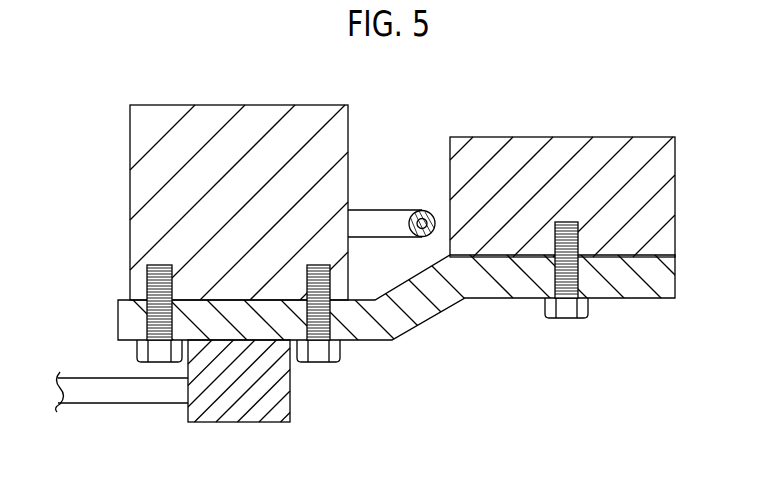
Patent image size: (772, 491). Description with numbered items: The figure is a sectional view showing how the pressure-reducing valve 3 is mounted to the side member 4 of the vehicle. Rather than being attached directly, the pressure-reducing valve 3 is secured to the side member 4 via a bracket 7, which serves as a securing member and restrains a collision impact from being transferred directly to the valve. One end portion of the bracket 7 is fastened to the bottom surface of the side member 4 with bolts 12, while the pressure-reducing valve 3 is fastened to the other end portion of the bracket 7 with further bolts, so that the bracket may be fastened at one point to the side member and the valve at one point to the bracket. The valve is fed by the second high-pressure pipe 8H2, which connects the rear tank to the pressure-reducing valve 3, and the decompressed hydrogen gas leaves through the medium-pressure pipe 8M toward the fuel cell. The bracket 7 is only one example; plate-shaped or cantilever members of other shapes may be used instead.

The pressure-reducing valve 3 is at (138, 175).
The side member 4 is at (623, 148).
The bracket 7 is at (420, 298).
The medium-pressure pipe 8M is at (378, 218).
The second high-pressure pipe 8H2 is at (135, 388).
The bolts 12 is at (568, 323).